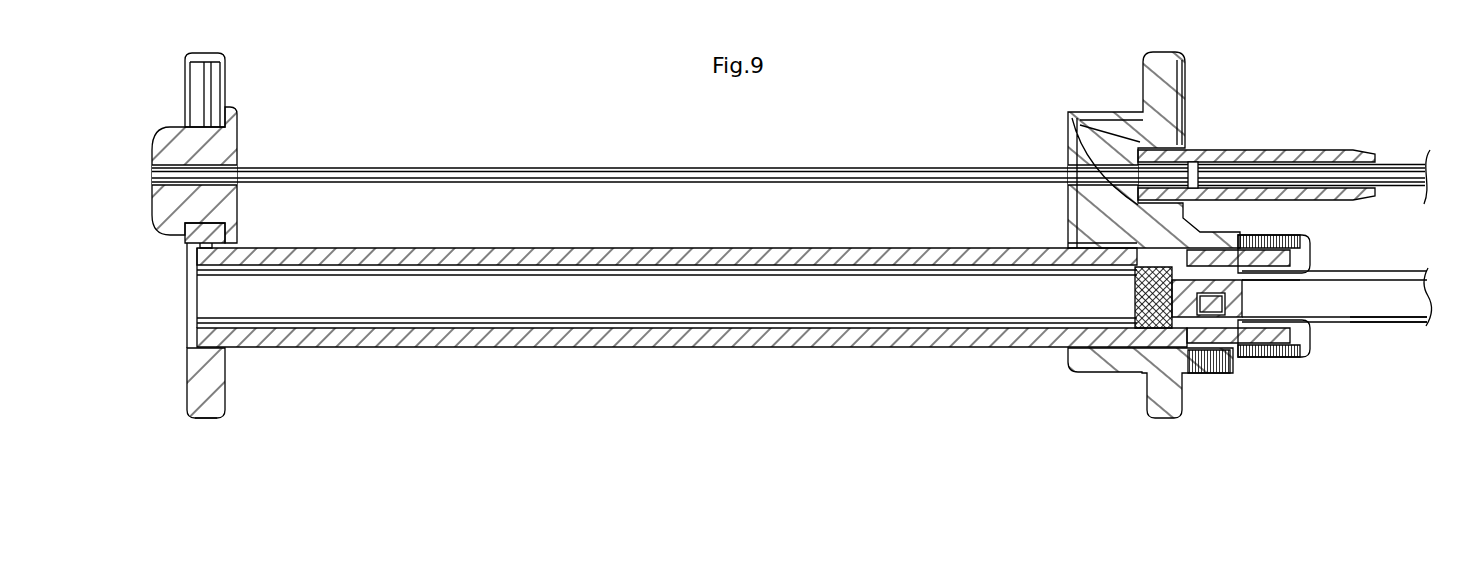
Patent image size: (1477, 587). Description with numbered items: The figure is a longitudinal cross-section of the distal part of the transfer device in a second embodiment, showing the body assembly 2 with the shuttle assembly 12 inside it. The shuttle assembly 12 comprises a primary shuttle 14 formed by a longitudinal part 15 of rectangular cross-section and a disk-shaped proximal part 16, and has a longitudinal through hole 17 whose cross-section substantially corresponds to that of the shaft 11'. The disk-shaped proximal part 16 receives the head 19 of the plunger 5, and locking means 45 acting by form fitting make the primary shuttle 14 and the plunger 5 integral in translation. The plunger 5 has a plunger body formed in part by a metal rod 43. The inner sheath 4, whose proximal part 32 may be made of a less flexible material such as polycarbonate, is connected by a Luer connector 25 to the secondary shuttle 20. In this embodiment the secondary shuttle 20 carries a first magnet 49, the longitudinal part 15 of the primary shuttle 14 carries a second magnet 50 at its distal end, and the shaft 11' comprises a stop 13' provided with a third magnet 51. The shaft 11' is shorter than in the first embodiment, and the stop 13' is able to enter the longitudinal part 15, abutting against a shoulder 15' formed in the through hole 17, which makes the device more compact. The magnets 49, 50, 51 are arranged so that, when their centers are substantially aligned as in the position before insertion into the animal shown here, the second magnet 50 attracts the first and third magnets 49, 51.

The body assembly 2 is at (1360, 335).
The inner sheath 4 is at (1393, 152).
The plunger 5 is at (150, 100).
The shaft 11' is at (1392, 360).
The shuttle assembly 12 is at (1125, 390).
The stop 13' is at (1135, 337).
The primary shuttle 14 is at (200, 421).
The longitudinal part 15 is at (692, 332).
The shoulder 15' is at (1232, 336).
The disk-shaped proximal part 16 is at (225, 392).
The longitudinal through hole 17 is at (403, 315).
The head 19 is at (162, 150).
The secondary shuttle 20 is at (1115, 108).
The Luer connector 25 is at (1288, 148).
The proximal part 32 is at (1408, 160).
The metal rod 43 is at (335, 166).
The locking means 45 is at (190, 238).
The first magnet 49 is at (1205, 321).
The second magnet 50 is at (1222, 313).
The third magnet 51 is at (1243, 300).